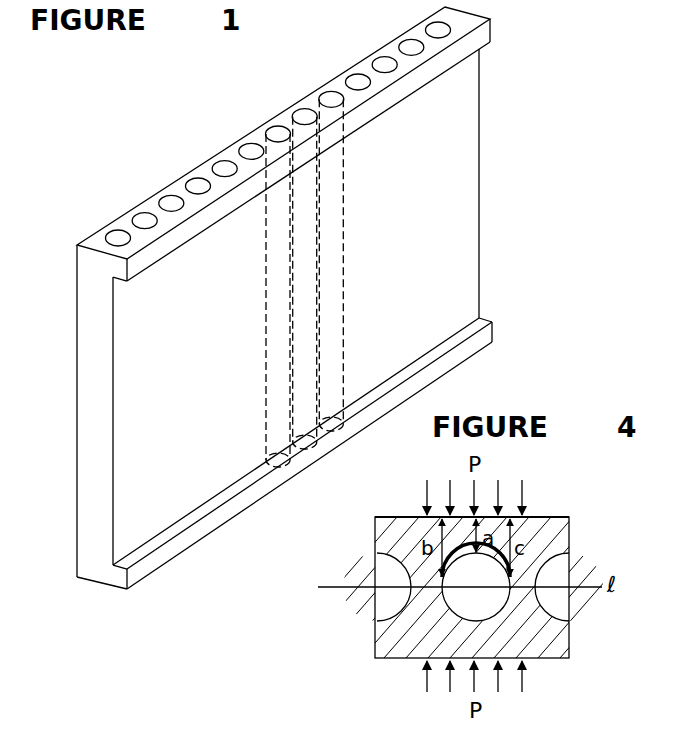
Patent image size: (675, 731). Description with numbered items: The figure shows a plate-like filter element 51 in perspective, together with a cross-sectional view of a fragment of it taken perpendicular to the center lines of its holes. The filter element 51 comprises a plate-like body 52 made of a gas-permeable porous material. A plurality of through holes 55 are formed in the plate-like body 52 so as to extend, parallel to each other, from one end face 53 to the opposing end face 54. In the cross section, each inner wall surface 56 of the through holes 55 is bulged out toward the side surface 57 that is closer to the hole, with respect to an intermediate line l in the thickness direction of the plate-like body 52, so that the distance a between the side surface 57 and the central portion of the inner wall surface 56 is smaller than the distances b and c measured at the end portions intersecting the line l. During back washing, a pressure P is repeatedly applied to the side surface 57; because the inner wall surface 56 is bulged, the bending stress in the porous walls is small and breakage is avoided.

In FIG. 1, the plate-like filter element 51 is at (290, 324).
In FIG. 1, the plate-like body 52 is at (90, 389).
In FIG. 4, the plate-like body 52 is at (558, 516).
In FIG. 1, the end face 53 is at (265, 237).
In FIG. 1, the end face 54 is at (276, 479).
In FIG. 1, the through holes 55 is at (167, 201).
In FIG. 4, the through holes 55 is at (488, 602).
In FIG. 4, the inner wall surface 56 is at (455, 569).
In FIG. 1, the side surface 57 is at (452, 277).
In FIG. 4, the side surface 57 is at (405, 517).